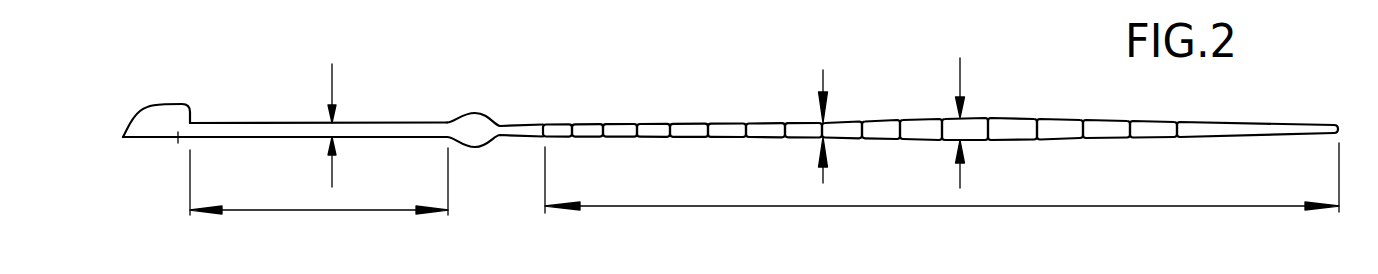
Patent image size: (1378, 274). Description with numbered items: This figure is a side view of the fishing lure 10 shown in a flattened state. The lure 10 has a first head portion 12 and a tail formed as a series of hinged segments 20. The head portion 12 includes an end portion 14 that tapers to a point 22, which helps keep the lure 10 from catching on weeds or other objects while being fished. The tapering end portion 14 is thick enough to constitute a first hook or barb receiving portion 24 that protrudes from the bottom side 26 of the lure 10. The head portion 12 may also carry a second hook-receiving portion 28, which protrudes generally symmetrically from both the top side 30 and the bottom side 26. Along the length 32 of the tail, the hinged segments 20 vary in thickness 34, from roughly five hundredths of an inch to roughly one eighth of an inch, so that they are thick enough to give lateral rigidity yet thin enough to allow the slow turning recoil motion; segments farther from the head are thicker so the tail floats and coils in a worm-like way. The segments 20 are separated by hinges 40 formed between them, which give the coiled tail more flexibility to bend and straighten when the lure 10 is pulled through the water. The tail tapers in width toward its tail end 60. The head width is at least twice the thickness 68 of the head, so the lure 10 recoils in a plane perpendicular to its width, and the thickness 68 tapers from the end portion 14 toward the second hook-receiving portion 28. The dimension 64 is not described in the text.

The fishing lure 10 is at (203, 27).
The head portion 12 is at (395, 127).
The end portion 14 is at (178, 143).
The hinged segments 20 is at (1145, 120).
The point 22 is at (122, 138).
The first hook receiving portion 24 is at (169, 103).
The bottom side 26 is at (590, 127).
The second hook-receiving portion 28 is at (485, 118).
The top side 30 is at (582, 138).
The length of the tail 32 is at (915, 207).
The thickness of hinged segments 34 is at (961, 64).
The hinges 40 is at (824, 78).
The tail end 60 is at (1293, 120).
The length of base portion 64 is at (392, 211).
The thickness of the head 68 is at (333, 68).